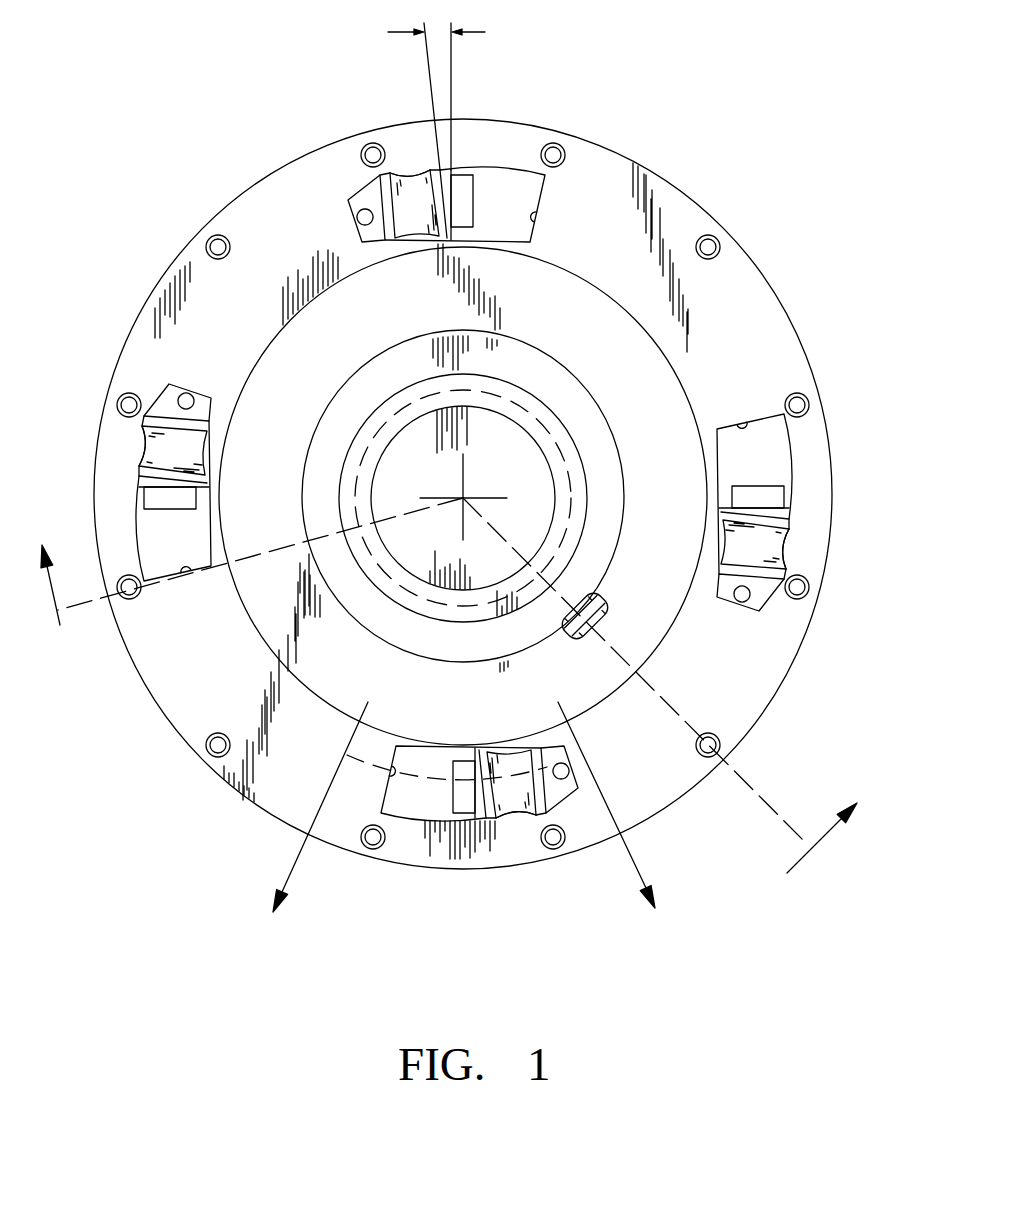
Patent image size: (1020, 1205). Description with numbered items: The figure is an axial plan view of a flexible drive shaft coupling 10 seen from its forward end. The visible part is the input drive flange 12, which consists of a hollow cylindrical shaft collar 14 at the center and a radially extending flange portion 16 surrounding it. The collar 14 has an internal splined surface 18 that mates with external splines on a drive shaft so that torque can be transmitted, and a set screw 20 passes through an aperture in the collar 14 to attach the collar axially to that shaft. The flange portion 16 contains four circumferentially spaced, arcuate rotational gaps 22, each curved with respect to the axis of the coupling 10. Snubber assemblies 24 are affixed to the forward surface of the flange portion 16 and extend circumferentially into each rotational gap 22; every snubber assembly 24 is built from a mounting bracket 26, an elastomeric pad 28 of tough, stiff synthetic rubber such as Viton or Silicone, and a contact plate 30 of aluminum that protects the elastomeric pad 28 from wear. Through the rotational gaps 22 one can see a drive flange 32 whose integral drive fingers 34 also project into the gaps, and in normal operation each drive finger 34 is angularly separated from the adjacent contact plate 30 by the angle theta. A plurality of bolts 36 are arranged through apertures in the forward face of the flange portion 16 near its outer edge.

The flexible drive shaft coupling 10 is at (213, 838).
The input drive flange 12 is at (688, 195).
The hollow cylindrical shaft collar 14 is at (360, 375).
The radially extending flange portion 16 is at (683, 322).
The internal splined surface 18 is at (548, 430).
The set screw 20 is at (607, 611).
The arcuate rotational gaps 22 is at (536, 217).
The snubber assemblies 24 is at (393, 155).
The mounting bracket 26 is at (348, 200).
The elastomeric pad 28 is at (418, 170).
The contact plate 30 is at (433, 173).
The drive flange 32 is at (523, 184).
The drive fingers 34 is at (476, 176).
The bolts 36 is at (708, 247).